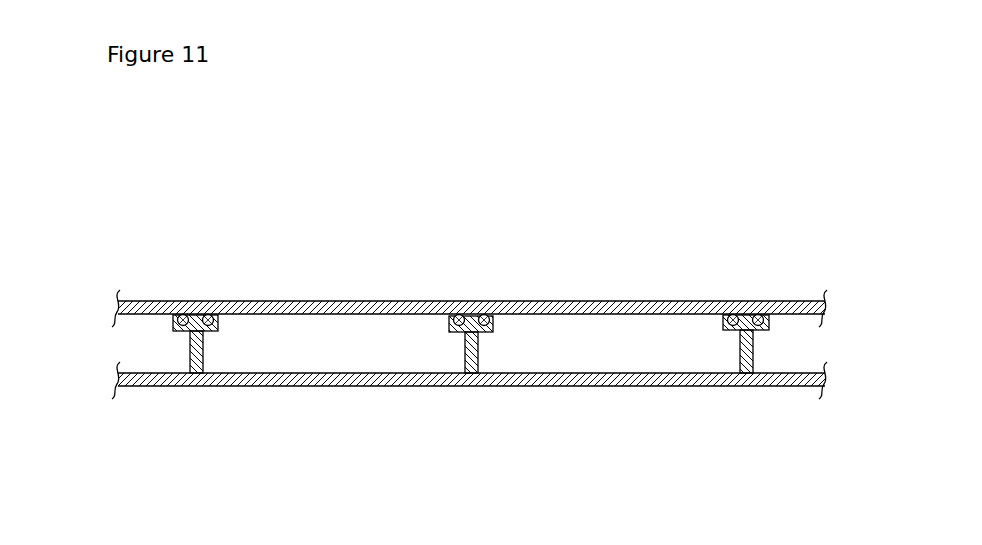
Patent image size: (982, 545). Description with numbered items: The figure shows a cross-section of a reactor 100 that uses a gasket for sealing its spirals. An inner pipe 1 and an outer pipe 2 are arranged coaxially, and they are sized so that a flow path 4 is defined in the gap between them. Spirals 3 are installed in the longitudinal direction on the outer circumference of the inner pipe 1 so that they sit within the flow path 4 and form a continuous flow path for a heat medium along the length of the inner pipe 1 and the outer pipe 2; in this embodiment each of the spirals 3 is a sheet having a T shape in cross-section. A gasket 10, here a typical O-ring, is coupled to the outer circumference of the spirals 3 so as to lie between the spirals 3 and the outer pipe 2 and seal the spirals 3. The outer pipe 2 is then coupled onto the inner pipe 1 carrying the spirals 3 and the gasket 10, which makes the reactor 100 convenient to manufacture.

The reactor 100 is at (103, 130).
The inner pipe 1 is at (302, 387).
The outer pipe 2 is at (353, 301).
The spirals 3 is at (455, 348).
The flow path 4 is at (580, 351).
The gasket 10 is at (460, 301).